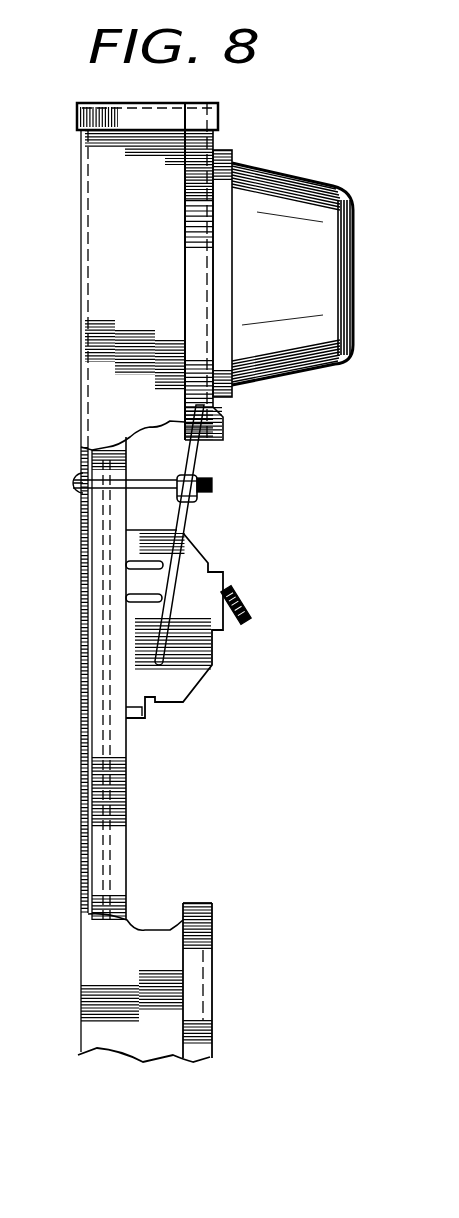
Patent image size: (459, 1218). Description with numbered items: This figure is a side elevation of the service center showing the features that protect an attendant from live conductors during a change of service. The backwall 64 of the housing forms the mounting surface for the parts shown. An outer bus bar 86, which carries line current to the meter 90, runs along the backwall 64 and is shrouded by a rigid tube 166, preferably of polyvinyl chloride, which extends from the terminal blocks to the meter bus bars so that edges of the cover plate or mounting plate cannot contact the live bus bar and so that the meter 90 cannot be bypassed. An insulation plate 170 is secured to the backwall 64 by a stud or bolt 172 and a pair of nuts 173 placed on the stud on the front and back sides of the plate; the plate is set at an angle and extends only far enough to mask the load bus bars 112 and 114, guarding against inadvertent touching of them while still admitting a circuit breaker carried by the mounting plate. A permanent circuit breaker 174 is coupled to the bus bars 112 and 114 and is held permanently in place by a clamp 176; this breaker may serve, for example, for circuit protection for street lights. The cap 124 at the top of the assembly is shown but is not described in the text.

The end cap 124 is at (219, 120).
The meter 90 is at (355, 205).
The backwall 64 is at (79, 742).
The rigid tube 166 is at (120, 849).
The outer bus bar 86 is at (112, 752).
The stud or bolt 172 is at (158, 480).
The nuts 173 is at (185, 503).
The insulation plate 170 is at (184, 568).
The bus bar 114 is at (144, 561).
The bus bar 112 is at (148, 603).
The permanent circuit breaker 174 is at (190, 672).
The clamp 176 is at (151, 712).